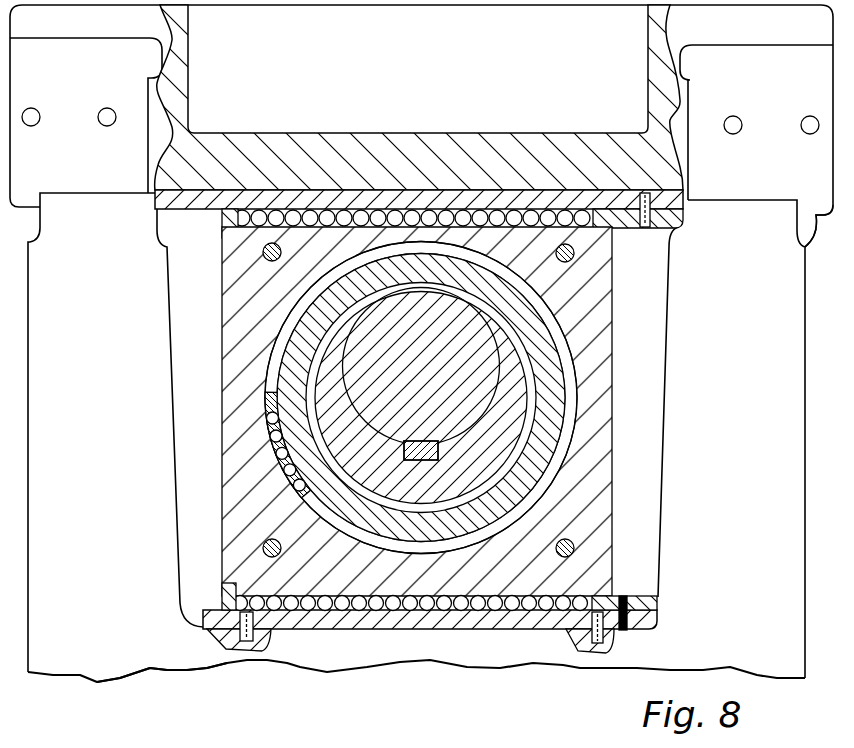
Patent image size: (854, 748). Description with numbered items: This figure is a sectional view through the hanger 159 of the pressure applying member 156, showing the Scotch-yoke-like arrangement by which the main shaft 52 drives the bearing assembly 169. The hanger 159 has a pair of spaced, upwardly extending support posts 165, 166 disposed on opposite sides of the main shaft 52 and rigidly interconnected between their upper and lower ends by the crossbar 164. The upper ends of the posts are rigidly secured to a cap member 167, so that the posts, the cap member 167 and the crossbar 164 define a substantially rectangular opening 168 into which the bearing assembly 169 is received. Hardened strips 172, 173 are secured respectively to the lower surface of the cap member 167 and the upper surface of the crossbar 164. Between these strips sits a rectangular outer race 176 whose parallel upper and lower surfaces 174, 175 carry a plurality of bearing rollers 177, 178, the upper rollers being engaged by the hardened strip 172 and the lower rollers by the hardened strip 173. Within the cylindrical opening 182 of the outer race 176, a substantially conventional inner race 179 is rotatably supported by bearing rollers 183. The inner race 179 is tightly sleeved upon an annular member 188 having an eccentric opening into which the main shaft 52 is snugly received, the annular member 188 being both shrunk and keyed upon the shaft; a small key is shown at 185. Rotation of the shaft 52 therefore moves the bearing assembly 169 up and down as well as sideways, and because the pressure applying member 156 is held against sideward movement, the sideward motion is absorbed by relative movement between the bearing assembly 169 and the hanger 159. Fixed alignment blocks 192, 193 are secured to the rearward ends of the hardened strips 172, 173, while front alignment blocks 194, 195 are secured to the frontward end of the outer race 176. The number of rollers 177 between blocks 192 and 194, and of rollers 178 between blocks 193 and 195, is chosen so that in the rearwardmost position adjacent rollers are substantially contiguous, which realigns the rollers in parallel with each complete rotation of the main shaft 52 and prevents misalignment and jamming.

The main shaft 52 is at (473, 340).
The pressure applying member 156 is at (150, 676).
The hanger 159 is at (190, 669).
The crossbar 164 is at (400, 656).
The support post 165 is at (115, 432).
The support post 166 is at (731, 439).
The cap member 167 is at (817, 216).
The rectangular opening 168 is at (182, 222).
The bearing assembly 169 is at (349, 186).
The hardened strip 172 is at (486, 205).
The hardened strip 173 is at (483, 618).
The upper surface 174 is at (283, 222).
The lower surface 175 is at (383, 598).
The outer race 176 is at (316, 583).
The bearing rollers 177 is at (413, 222).
The bearing rollers 178 is at (442, 603).
The inner race 179 is at (466, 530).
The cylindrical opening 182 is at (512, 518).
The bearing rollers 183 is at (300, 492).
The key 185 is at (443, 451).
The annular member 188 is at (322, 349).
The fixed alignment block 192 is at (676, 229).
The fixed alignment block 193 is at (657, 605).
The front alignment block 194 is at (225, 232).
The front alignment block 195 is at (226, 594).